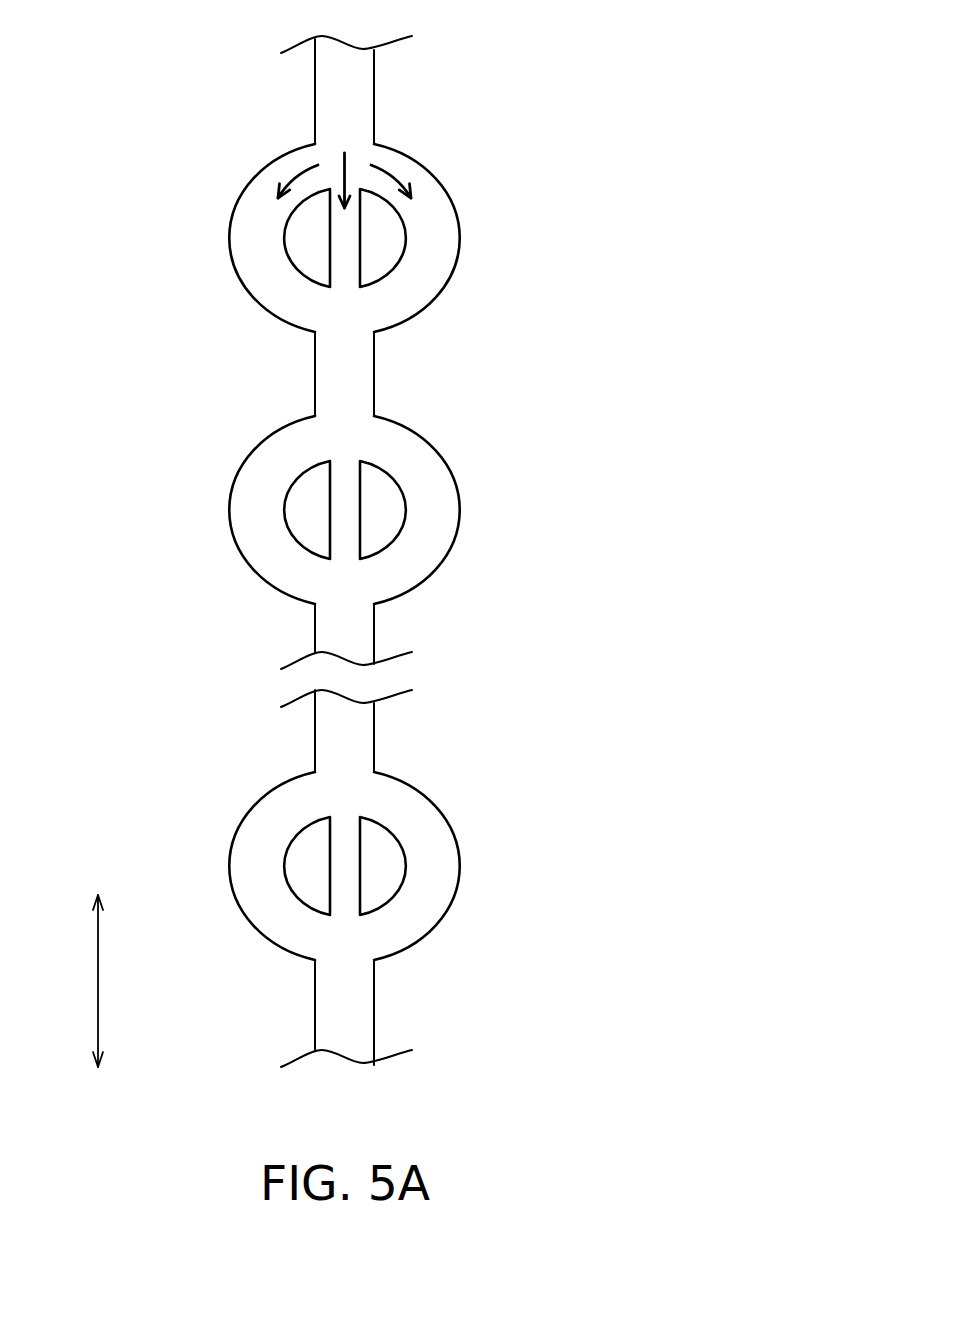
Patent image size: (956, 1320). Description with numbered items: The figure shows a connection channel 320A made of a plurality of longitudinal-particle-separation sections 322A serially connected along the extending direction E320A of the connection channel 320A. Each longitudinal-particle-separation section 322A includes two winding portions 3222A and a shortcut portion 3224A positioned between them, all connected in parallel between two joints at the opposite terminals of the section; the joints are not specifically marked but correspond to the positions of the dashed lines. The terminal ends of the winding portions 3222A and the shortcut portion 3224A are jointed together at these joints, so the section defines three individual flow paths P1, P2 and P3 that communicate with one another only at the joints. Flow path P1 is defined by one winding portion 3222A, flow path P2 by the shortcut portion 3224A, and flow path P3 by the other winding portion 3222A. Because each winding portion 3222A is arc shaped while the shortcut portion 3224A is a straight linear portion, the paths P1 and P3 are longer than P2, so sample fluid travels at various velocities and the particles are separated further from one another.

The connection channel 320A is at (439, 579).
The longitudinal-particle-separation section 322A is at (439, 199).
The winding portion 3222A is at (460, 229).
The shortcut portion 3224A is at (360, 224).
The flow path P1 is at (300, 177).
The flow path P2 is at (340, 163).
The flow path P3 is at (392, 170).
The extending direction E320A is at (135, 981).